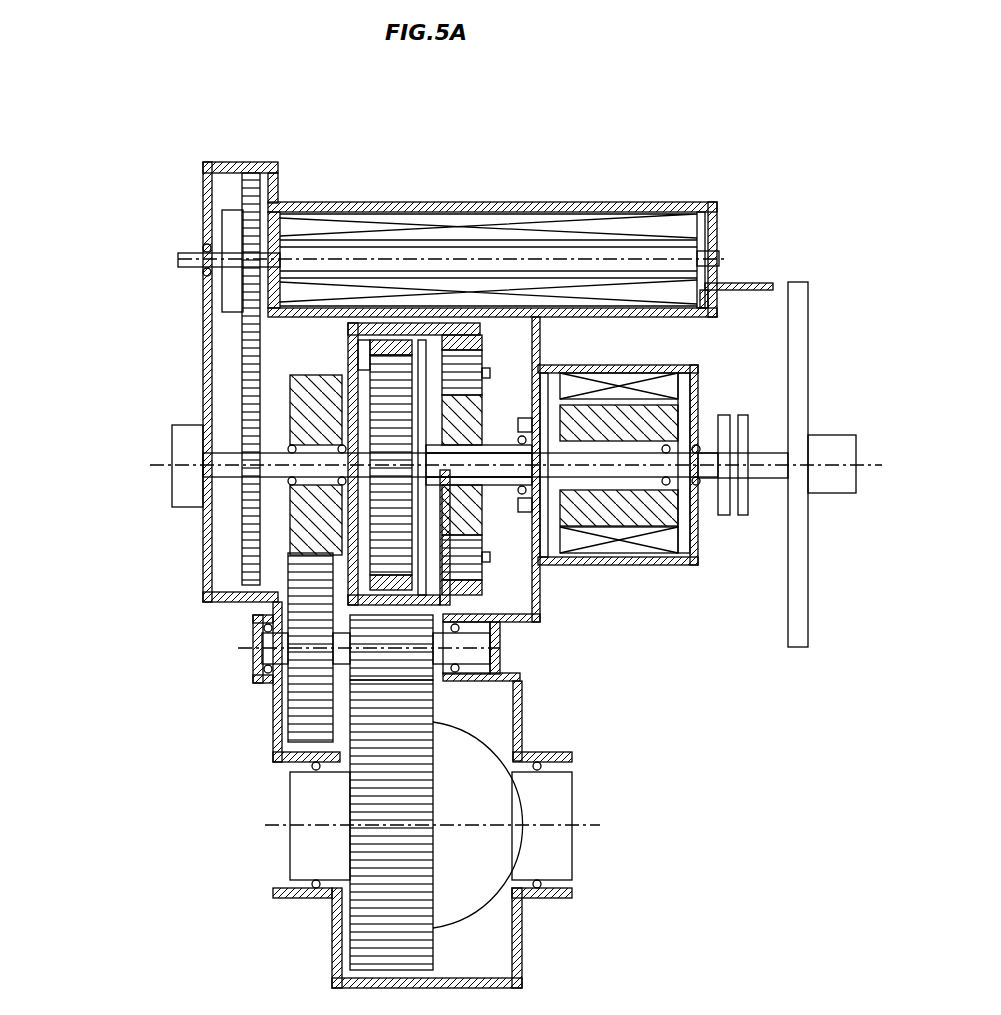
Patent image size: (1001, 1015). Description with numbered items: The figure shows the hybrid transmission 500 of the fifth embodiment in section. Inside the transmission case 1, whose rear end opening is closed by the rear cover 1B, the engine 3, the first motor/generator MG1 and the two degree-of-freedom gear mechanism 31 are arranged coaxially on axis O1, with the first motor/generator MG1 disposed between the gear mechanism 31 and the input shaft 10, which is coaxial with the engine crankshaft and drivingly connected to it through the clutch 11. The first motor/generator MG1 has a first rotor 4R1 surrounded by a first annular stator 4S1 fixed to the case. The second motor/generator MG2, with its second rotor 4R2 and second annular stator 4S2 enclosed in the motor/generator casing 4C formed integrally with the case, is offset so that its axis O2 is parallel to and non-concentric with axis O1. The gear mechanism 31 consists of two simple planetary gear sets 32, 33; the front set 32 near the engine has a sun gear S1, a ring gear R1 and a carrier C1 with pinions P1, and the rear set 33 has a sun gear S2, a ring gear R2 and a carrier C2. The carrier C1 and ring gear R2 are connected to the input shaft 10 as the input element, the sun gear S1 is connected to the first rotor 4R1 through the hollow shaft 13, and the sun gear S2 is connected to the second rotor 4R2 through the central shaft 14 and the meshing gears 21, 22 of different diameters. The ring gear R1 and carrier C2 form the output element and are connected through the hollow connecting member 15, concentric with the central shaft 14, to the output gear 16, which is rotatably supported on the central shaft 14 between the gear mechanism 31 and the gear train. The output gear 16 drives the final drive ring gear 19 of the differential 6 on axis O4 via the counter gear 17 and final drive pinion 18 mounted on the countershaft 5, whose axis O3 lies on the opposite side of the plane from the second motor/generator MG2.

The hybrid transmission 500 is at (662, 162).
The transmission case 1 is at (615, 320).
The rear cover 1B is at (205, 332).
The motor/generator casing 4C is at (592, 204).
The second motor/generator MG2 is at (372, 238).
The second annular stator 4S2 is at (283, 222).
The second rotor 4R2 is at (272, 248).
The axis of second motor/generator O2 is at (720, 259).
The gear 22 is at (242, 298).
The gear 21 is at (240, 375).
The output gear 16 is at (300, 410).
The hollow connecting member 15 is at (342, 497).
The central shaft 14 is at (280, 478).
The sun gear S2 is at (378, 437).
The ring gear R2 is at (366, 345).
The carrier C2 is at (357, 370).
The two degree-of-freedom gear mechanism 31 is at (466, 227).
The simple planetary gear set 32 is at (471, 330).
The simple planetary gear set 33 is at (411, 330).
The ring gear R1 is at (462, 338).
The pinions P1 is at (462, 395).
The carrier C1 is at (440, 430).
The sun gear S1 is at (486, 524).
The hollow shaft 13 is at (503, 438).
The first motor/generator MG1 is at (681, 536).
The first annular stator 4S1 is at (600, 545).
The first rotor 4R1 is at (600, 520).
The input shaft 10 is at (724, 415).
The clutch 11 is at (742, 415).
The engine 3 is at (823, 492).
The axis of hybrid transmission O1 is at (857, 462).
The counter gear 17 is at (300, 573).
The axis of countershaft O3 is at (245, 650).
The countershaft 5 is at (465, 640).
The final drive pinion 18 is at (445, 654).
The final drive ring gear 19 is at (415, 715).
The differential 6 is at (490, 733).
The axis of differential O4 is at (275, 826).